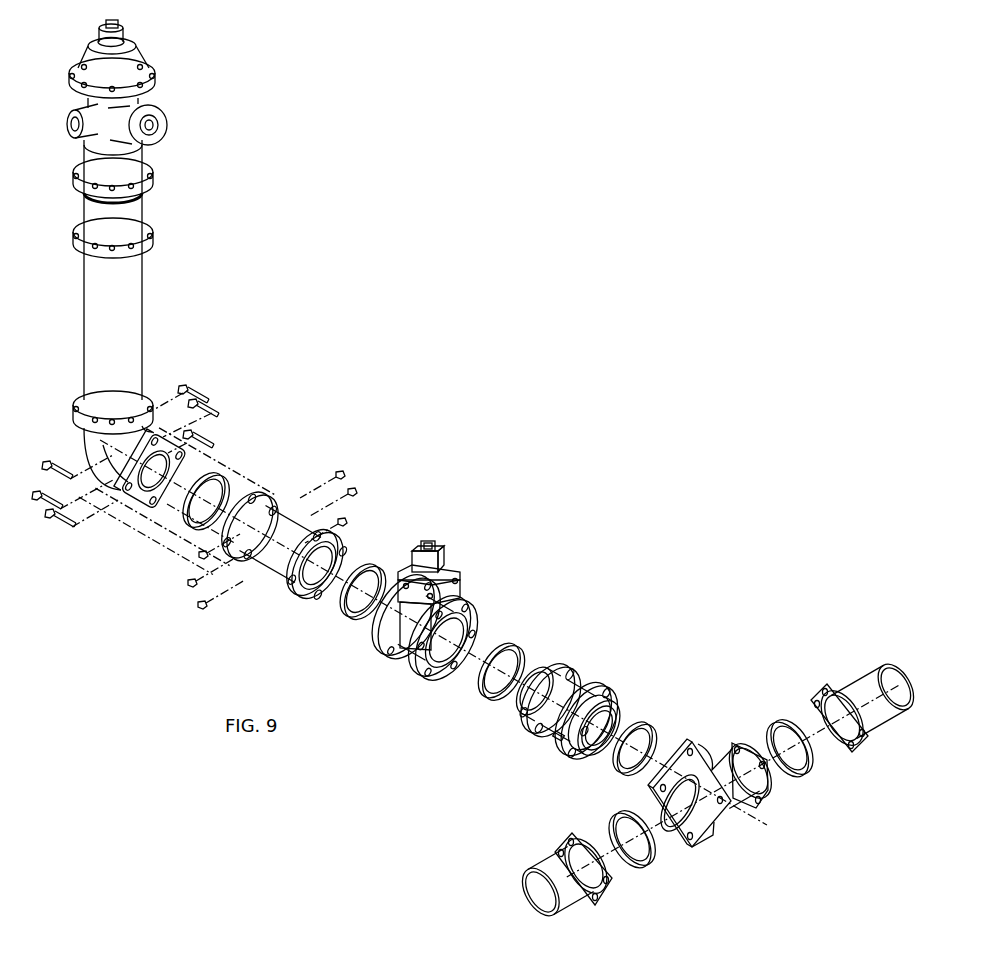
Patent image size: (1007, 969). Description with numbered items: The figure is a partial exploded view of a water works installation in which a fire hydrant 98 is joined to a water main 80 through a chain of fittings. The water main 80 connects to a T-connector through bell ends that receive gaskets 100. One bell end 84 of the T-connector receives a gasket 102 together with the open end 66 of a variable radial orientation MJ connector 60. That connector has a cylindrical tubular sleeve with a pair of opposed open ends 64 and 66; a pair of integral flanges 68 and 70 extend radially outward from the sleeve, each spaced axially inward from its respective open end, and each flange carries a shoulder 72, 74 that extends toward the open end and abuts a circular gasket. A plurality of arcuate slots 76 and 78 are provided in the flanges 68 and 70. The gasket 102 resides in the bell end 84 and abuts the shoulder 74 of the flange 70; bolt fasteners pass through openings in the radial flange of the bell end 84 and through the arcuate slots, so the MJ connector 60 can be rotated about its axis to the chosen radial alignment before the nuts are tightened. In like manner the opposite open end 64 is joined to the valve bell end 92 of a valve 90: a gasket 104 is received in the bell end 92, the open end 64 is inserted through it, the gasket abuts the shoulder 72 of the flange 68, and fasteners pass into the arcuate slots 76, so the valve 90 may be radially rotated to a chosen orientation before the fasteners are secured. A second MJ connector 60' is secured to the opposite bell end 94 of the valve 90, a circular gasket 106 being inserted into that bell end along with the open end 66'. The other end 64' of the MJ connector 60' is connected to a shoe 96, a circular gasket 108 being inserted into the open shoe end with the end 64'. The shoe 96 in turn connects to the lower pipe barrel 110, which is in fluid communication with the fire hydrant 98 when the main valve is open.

The fire hydrant 98 is at (134, 156).
The lower pipe barrel 110 is at (133, 318).
The shoe 96 is at (153, 433).
The circular gasket 108 is at (214, 473).
The MJ connector 60' is at (269, 522).
The open end 64' is at (213, 526).
The open end 66' is at (338, 549).
The circular gasket 106 is at (373, 565).
The valve 90 is at (421, 610).
The valve bell end 92 is at (477, 610).
The bell end 94 is at (385, 623).
The gasket 104 is at (517, 650).
The variable radial orientation MJ connector 60 is at (547, 708).
The open end 64 is at (518, 703).
The shoulder 72 is at (530, 683).
The flange 68 is at (572, 673).
The arcuate slots 76 is at (527, 715).
The arcuate slots 78 is at (558, 737).
The flange 70 is at (603, 692).
The shoulder 74 is at (567, 753).
The open end 66 is at (605, 722).
The gasket 102 is at (642, 725).
The bell end 84 is at (690, 742).
The gaskets 100 is at (780, 723).
The water main 80 is at (857, 682).